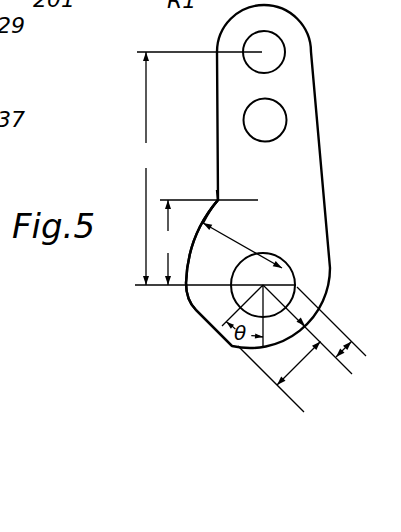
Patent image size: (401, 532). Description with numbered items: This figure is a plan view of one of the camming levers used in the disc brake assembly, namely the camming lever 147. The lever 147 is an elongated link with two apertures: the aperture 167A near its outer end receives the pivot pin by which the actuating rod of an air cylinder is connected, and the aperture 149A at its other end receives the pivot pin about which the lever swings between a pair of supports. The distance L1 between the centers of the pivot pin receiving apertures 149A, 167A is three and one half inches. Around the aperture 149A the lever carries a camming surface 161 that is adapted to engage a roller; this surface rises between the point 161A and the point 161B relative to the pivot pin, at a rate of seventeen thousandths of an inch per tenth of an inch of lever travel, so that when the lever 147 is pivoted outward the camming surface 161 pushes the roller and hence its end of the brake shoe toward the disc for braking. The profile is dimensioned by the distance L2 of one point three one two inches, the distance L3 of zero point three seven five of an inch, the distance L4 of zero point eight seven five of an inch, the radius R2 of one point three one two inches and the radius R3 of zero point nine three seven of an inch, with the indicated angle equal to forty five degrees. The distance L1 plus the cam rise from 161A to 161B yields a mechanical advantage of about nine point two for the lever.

The camming lever 147 is at (318, 123).
The aperture 149A is at (282, 280).
The camming surface 161 is at (186, 262).
The point 161A is at (197, 311).
The point 161B is at (219, 199).
The aperture 167A is at (279, 54).
The distance L1 is at (212, 168).
The distance L2 is at (206, 242).
The distance L3 is at (345, 352).
The distance L4 is at (279, 377).
The radius R2 is at (238, 243).
The radius R3 is at (291, 312).